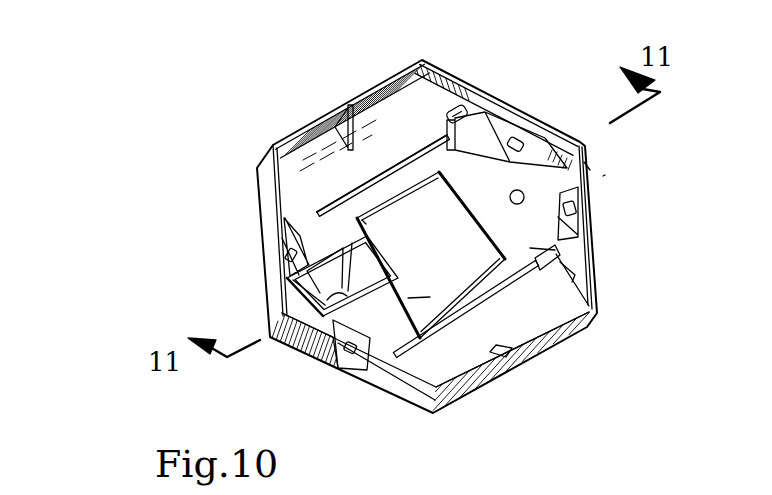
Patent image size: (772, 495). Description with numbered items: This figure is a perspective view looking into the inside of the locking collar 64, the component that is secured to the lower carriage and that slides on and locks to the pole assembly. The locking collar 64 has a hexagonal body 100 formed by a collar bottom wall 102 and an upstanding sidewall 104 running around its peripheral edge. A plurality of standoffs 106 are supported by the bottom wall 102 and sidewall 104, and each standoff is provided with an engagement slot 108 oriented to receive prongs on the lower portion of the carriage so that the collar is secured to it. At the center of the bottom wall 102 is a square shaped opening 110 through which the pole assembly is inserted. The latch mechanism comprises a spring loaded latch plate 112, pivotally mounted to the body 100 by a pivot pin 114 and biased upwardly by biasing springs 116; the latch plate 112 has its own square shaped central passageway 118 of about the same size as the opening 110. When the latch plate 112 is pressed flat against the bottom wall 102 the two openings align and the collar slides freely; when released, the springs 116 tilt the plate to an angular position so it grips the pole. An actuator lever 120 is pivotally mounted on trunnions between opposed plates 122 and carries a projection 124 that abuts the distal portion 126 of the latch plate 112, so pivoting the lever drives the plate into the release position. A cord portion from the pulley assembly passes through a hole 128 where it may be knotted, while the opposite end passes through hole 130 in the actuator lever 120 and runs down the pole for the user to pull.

The locking collar 64 is at (612, 171).
The hexagonal body 100 is at (565, 342).
The collar bottom wall 102 is at (488, 382).
The upstanding sidewall 104 is at (402, 73).
The standoffs 106 is at (524, 136).
The engagement slot 108 is at (514, 132).
The square shaped opening 110 is at (456, 248).
The spring loaded latch plate 112 is at (555, 250).
The pivot pin 114 is at (452, 108).
The biasing springs 116 is at (440, 147).
The square shaped central passageway 118 is at (587, 325).
The actuator lever 120 is at (287, 283).
The opposed plates 122 is at (273, 145).
The projection 124 is at (366, 222).
The distal portion 126 is at (430, 297).
The hole 128 is at (587, 168).
The hole 130 is at (538, 288).